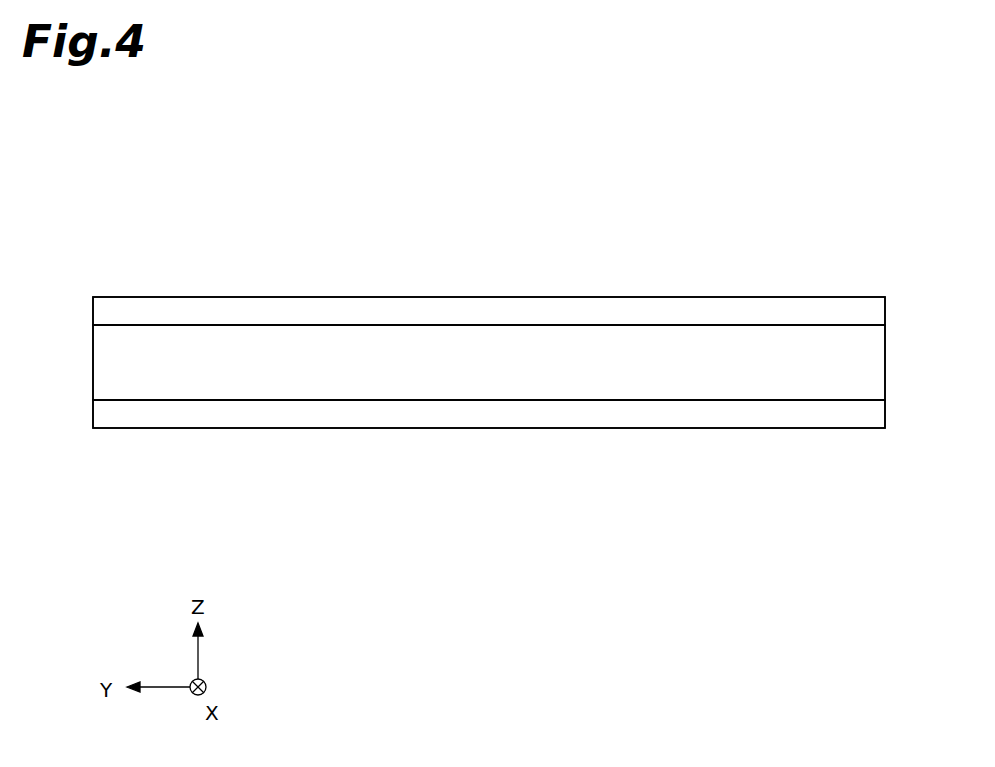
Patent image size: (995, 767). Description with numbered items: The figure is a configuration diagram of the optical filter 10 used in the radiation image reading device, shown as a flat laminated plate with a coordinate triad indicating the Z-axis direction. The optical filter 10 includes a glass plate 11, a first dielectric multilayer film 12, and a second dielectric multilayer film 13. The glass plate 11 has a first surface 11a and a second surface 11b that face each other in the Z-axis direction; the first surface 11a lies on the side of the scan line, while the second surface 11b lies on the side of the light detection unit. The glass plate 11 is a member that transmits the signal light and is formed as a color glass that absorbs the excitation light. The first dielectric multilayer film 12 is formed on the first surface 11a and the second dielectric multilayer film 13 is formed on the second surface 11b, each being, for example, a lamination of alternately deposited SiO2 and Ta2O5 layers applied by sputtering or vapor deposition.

The optical filter 10 is at (846, 282).
The glass plate 11 is at (417, 375).
The first surface 11a is at (273, 400).
The second surface 11b is at (282, 325).
The first dielectric multilayer film 12 is at (600, 422).
The second dielectric multilayer film 13 is at (601, 305).